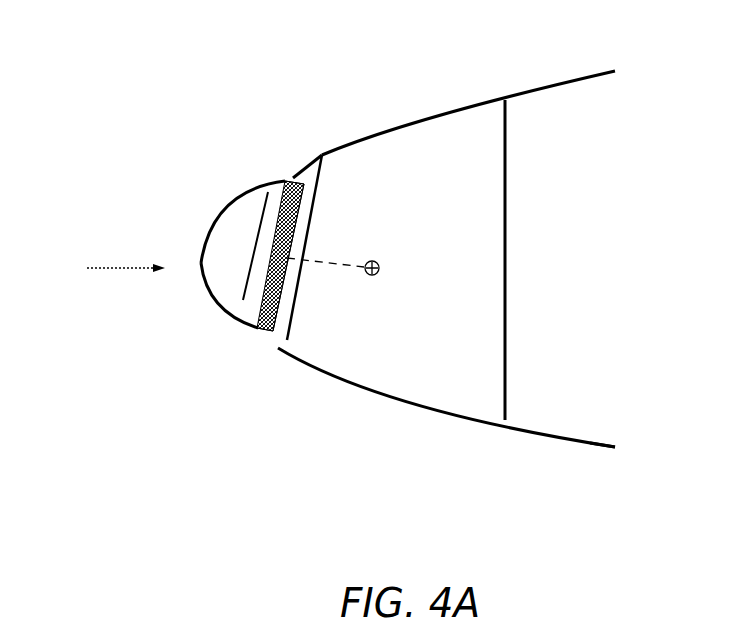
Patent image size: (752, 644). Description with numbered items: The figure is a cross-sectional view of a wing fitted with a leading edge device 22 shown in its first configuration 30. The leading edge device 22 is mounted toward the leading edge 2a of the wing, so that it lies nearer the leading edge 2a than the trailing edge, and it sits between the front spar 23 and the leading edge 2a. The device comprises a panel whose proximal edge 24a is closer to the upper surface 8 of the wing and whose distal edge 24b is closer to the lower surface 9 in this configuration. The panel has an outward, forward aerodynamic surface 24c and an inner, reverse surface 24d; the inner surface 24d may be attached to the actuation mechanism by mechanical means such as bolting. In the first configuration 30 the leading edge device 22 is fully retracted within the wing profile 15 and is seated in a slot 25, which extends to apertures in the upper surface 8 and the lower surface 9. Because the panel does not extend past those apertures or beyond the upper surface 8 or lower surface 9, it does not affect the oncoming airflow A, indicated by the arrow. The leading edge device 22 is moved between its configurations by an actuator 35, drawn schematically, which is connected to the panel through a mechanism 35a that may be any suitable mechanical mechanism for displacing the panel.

The upper surface 8 is at (465, 108).
The lower surface 9 is at (543, 433).
The wing profile 15 is at (608, 448).
The front spar 23 is at (508, 317).
The first configuration 30 is at (311, 399).
The outward surface 24c is at (283, 190).
The proximal edge 24a is at (293, 178).
The distal edge 24b is at (270, 330).
The inner surface 24d is at (300, 202).
The slot 25 is at (260, 193).
The leading edge 2a is at (203, 245).
The leading edge device 22 is at (210, 325).
The actuator 35 is at (379, 268).
The mechanism 35a is at (305, 262).
The oncoming airflow A is at (105, 272).